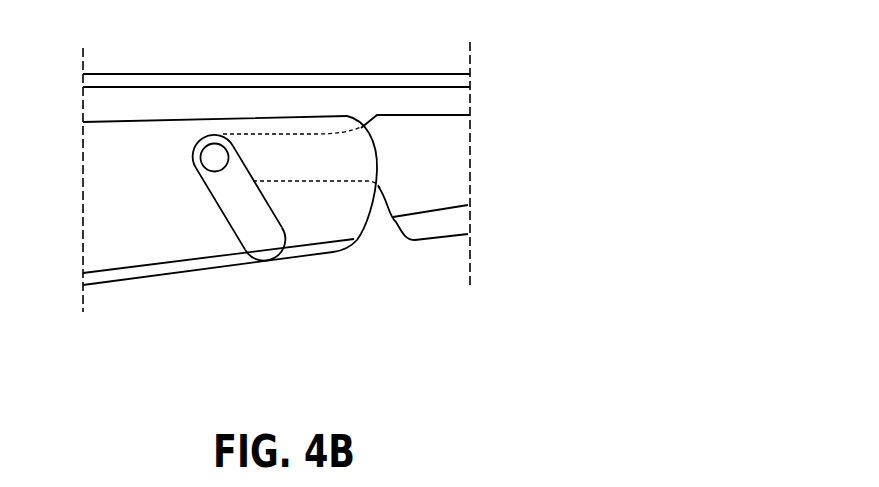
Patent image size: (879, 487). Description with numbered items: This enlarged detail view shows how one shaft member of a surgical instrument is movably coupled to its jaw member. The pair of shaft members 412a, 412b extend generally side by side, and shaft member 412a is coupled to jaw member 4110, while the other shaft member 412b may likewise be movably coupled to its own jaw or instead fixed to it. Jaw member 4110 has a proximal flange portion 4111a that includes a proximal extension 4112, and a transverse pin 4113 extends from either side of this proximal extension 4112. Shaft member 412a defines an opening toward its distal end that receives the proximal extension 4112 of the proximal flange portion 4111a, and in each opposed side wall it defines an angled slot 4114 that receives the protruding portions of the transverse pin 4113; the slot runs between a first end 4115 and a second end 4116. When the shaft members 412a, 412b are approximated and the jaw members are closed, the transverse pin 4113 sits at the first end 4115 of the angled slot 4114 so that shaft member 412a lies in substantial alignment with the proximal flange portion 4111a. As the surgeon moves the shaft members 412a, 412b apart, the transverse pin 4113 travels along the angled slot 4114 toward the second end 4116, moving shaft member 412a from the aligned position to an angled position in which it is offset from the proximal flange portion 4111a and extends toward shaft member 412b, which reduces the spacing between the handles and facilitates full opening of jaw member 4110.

The jaw member 4110 is at (448, 247).
The proximal flange portion 4111a is at (450, 165).
The proximal extension 4112 is at (306, 152).
The transverse pin 4113 is at (215, 136).
The arm 4114 is at (242, 223).
The pin hole 4115 is at (200, 139).
The rounded end 4116 is at (277, 258).
The shaft member 412a is at (138, 257).
The shaft member 412b is at (445, 80).